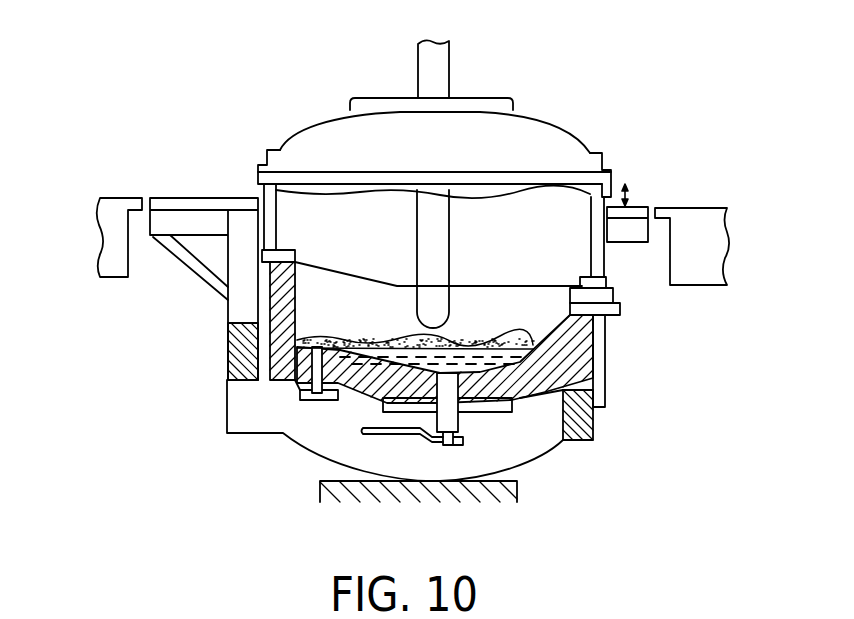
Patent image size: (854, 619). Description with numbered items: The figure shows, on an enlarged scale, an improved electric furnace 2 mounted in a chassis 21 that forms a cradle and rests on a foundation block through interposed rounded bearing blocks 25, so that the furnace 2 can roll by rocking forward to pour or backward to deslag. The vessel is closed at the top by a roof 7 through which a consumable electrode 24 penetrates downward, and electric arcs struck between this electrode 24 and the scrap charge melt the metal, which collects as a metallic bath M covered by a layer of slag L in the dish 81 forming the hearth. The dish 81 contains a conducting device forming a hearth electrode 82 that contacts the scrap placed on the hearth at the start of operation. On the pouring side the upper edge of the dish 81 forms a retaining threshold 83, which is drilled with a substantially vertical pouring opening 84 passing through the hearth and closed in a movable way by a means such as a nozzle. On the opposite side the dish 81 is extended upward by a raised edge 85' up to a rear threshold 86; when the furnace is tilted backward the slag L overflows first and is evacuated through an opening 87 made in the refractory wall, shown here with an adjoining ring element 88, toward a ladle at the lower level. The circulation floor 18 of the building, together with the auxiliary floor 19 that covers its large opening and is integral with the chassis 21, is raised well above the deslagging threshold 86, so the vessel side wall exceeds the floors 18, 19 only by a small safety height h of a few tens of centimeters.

The furnace 2 is at (559, 113).
The lid 7 is at (320, 134).
The circulation floor 18 is at (122, 197).
The auxiliary floor 19 is at (197, 197).
The chassis 21 is at (227, 343).
The consumable electrode 24 is at (440, 232).
The rounded bearing blocks 25 is at (321, 460).
The dish 81 is at (345, 347).
The hearth electrode 82 is at (464, 398).
The retaining threshold 83 is at (321, 340).
The pouring opening 84 is at (298, 387).
The raised edge 85' is at (485, 359).
The rear threshold 86 is at (610, 317).
The opening 87 is at (607, 300).
The lower flange ring 88 is at (618, 313).
The small height h is at (627, 181).
The slag L is at (520, 351).
The metallic bath M is at (537, 367).